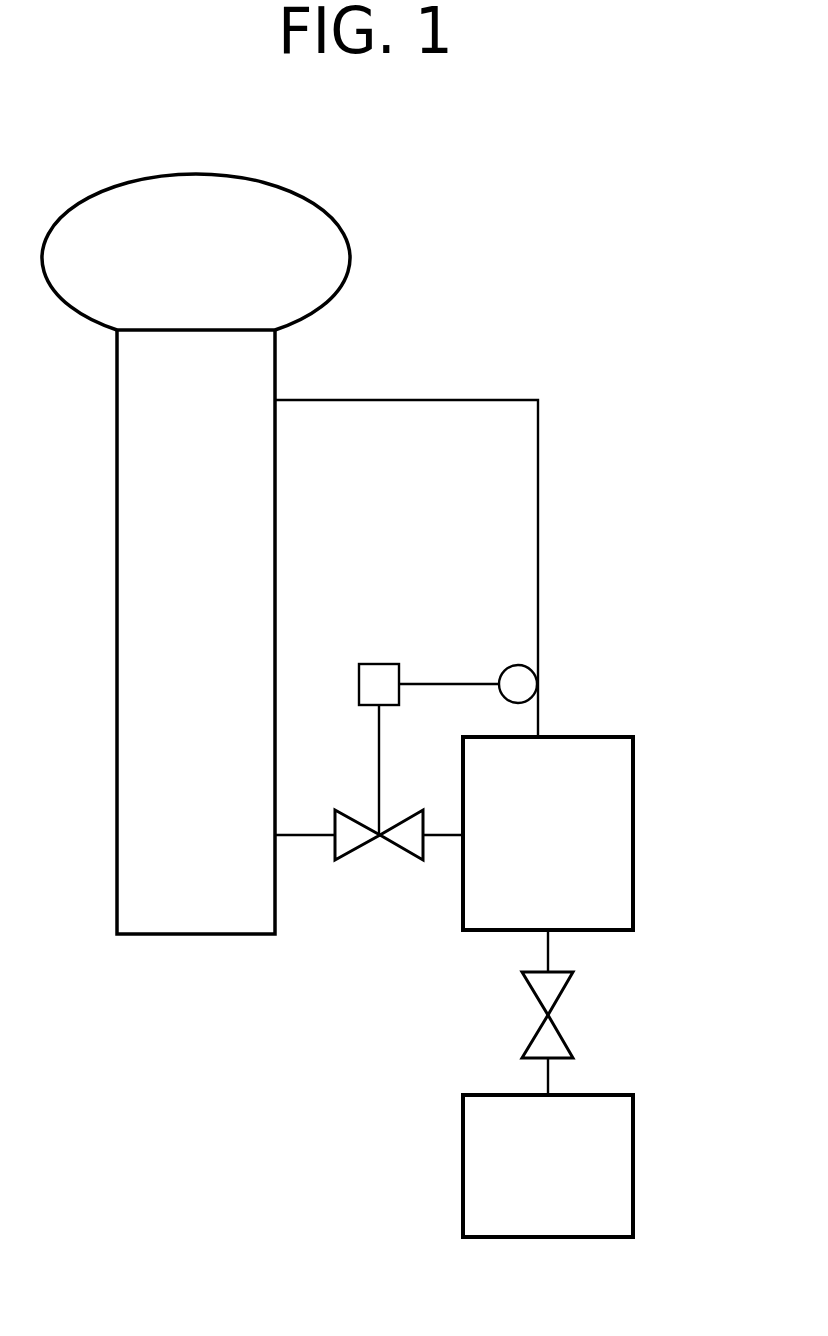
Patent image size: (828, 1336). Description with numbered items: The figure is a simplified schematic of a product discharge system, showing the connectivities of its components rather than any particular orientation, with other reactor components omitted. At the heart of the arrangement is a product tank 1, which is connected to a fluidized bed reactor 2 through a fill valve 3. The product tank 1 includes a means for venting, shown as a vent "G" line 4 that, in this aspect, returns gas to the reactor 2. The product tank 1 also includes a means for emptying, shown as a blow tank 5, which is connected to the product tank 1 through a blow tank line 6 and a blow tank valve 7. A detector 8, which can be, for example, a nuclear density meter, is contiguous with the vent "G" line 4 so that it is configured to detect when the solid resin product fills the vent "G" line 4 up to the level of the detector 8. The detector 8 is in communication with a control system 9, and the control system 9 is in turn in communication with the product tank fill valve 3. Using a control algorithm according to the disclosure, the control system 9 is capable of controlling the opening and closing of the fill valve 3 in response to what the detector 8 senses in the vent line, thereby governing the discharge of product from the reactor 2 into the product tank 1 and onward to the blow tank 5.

The product tank 1 is at (633, 818).
The fluidized bed reactor 2 is at (275, 362).
The fill valve 3 is at (372, 843).
The vent "G" line 4 is at (538, 543).
The blow tank 5 is at (633, 1152).
The blow tank line 6 is at (548, 947).
The blow tank valve 7 is at (556, 1030).
The detector 8 is at (538, 682).
The control system 9 is at (375, 664).